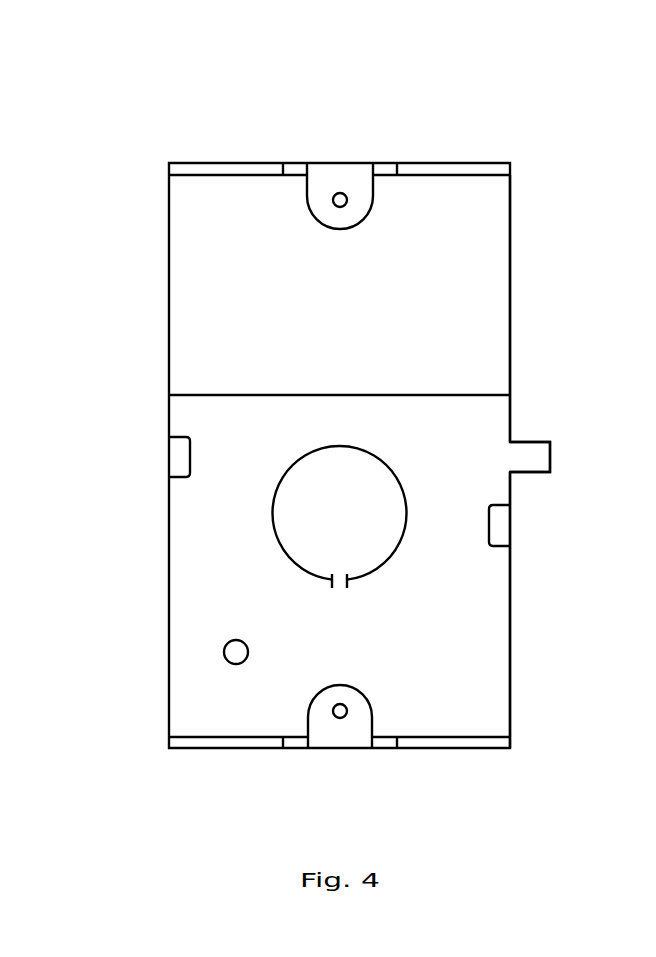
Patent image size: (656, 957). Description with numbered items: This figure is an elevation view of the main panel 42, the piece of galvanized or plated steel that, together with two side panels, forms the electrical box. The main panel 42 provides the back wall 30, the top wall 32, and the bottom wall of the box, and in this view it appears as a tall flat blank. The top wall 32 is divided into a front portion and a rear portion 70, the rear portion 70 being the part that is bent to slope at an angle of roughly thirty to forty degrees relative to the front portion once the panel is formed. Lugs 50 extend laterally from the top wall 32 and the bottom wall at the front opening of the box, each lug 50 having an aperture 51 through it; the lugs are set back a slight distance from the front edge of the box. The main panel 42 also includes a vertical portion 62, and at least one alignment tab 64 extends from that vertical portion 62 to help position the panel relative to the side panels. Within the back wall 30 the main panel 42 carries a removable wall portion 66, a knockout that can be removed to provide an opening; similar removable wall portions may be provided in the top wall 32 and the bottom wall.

The main panel 42 is at (230, 138).
The top wall 32 is at (428, 172).
The rear portion 70 is at (339, 279).
The back wall 30 is at (339, 571).
The lug 50 is at (350, 218).
The aperture 51 is at (333, 205).
The removable wall portion 66 is at (340, 517).
The alignment tab 64 is at (552, 455).
The vertical portion 62 is at (512, 603).